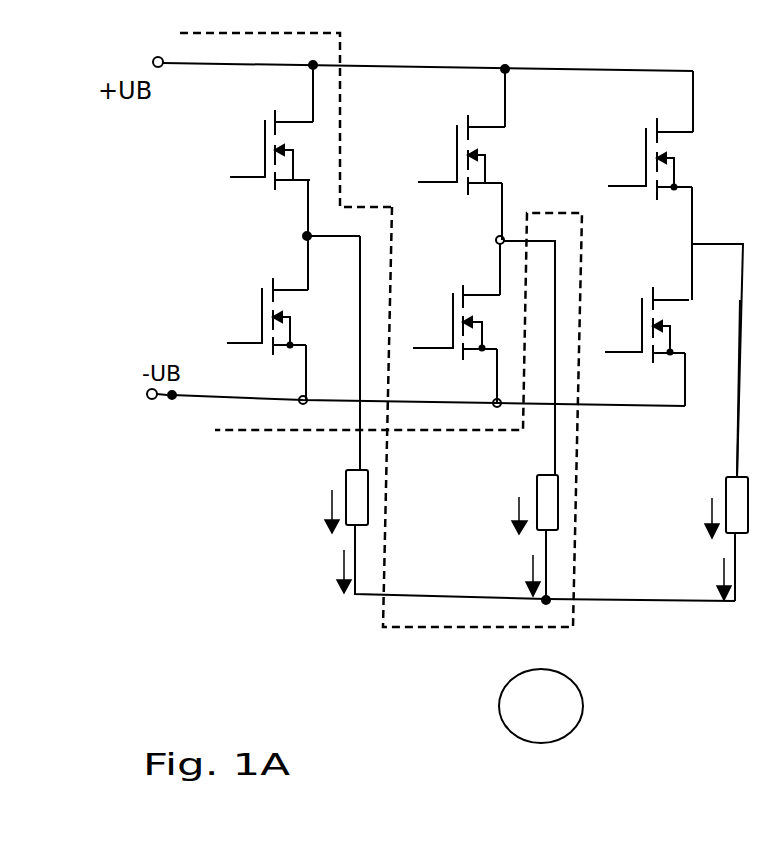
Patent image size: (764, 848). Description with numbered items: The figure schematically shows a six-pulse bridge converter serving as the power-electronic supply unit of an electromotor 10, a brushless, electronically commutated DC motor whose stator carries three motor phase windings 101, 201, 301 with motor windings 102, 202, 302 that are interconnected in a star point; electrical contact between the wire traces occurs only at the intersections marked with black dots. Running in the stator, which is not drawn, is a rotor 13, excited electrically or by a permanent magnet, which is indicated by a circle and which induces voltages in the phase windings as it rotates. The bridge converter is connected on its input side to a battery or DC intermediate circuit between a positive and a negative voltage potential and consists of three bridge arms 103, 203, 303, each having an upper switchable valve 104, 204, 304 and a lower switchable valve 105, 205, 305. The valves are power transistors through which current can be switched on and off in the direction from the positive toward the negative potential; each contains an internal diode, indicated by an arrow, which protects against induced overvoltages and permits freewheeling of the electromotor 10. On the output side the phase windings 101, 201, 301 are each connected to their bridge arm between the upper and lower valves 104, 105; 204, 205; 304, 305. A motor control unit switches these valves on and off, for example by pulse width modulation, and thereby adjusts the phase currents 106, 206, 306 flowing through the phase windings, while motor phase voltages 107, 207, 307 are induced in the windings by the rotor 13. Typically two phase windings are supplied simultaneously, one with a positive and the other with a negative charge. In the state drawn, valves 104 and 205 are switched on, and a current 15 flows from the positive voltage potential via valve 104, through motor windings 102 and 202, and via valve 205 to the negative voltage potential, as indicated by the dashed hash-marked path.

The electromotor 10 is at (393, 628).
The rotor 13 is at (583, 687).
The current 15 is at (190, 33).
The motor phase winding 101 is at (353, 455).
The motor winding 102 is at (343, 484).
The bridge arm 103 is at (302, 97).
The upper switchable valve 104 is at (255, 168).
The lower switchable valve 105 is at (250, 328).
The phase current 106 is at (343, 568).
The motor phase voltage 107 is at (330, 510).
The motor phase winding 201 is at (540, 458).
The motor winding 202 is at (535, 488).
The bridge arm 203 is at (500, 100).
The upper switchable valve 204 is at (448, 172).
The lower switchable valve 205 is at (480, 290).
The phase current 206 is at (530, 572).
The motor phase voltage 207 is at (517, 517).
The motor phase winding 301 is at (733, 462).
The motor winding 302 is at (722, 490).
The bridge arm 303 is at (690, 105).
The upper switchable valve 304 is at (640, 176).
The lower switchable valve 305 is at (675, 298).
The phase current 306 is at (722, 577).
The motor phase voltage 307 is at (708, 518).